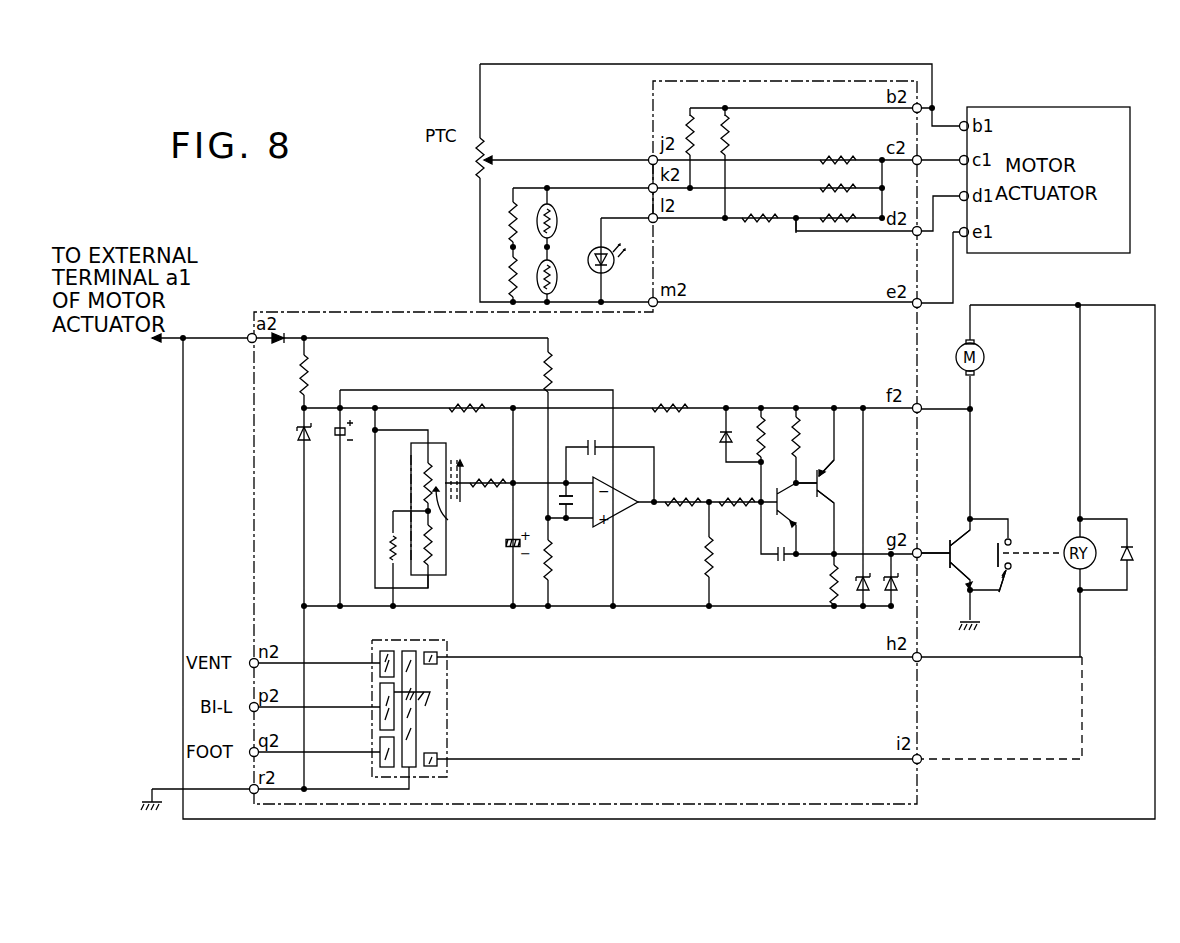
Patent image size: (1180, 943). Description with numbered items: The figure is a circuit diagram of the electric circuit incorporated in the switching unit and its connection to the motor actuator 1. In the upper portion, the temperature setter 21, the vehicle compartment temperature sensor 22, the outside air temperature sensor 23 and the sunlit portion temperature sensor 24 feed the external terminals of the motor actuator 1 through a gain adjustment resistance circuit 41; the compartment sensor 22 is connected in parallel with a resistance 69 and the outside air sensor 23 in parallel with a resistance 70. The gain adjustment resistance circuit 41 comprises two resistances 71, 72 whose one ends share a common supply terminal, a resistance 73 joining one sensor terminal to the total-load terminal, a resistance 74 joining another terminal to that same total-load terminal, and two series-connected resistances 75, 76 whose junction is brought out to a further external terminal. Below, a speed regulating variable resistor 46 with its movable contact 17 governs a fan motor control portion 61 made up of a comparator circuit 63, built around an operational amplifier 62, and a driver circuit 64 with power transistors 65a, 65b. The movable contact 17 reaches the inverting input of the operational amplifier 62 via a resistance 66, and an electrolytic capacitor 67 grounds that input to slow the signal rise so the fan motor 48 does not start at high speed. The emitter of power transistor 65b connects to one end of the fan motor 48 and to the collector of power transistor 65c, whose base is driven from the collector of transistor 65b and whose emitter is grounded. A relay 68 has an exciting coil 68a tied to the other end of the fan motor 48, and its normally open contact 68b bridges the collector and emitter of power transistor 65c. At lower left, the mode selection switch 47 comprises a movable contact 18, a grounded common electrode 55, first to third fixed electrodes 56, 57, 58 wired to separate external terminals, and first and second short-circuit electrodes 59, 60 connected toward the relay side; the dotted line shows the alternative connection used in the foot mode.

The motor actuator 1 is at (1038, 253).
The movable contact 17 is at (455, 510).
The movable contact 18 is at (440, 702).
The temperature setter 21 is at (470, 178).
The vehicle compartment temperature sensor 22 is at (557, 219).
The outside air temperature sensor 23 is at (557, 274).
The sunlit portion temperature sensor 24 is at (611, 270).
The gain adjustment resistance circuit 41 is at (776, 226).
The speed regulating variable resistor 46 is at (446, 546).
The mode selection switch 47 is at (450, 722).
The fan motor 48 is at (985, 357).
The common electrode 55 is at (408, 652).
The first fixed electrode 56 is at (381, 652).
The second fixed electrode 57 is at (380, 694).
The third fixed electrode 58 is at (380, 760).
The first short-circuit electrode 59 is at (434, 654).
The second short-circuit electrode 60 is at (440, 766).
The fan motor control portion 61 is at (646, 403).
The operational amplifier 62 is at (622, 508).
The comparator circuit 63 is at (592, 527).
The driver circuit 64 is at (786, 560).
The power transistor 65a is at (772, 512).
The power transistor 65b is at (822, 492).
The power transistor 65c is at (950, 545).
The resistance 66 is at (482, 483).
The electrolytic capacitor 67 is at (508, 539).
The relay 68 is at (1062, 598).
The exciting coil 68a is at (1068, 540).
The normally open contact 68b is at (1021, 593).
The resistance 69 is at (510, 224).
The resistance 70 is at (496, 274).
The resistance 71 is at (688, 130).
The resistance 72 is at (729, 133).
The resistance 73 is at (835, 155).
The resistance 74 is at (834, 186).
The resistance 75 is at (765, 224).
The resistance 76 is at (834, 218).